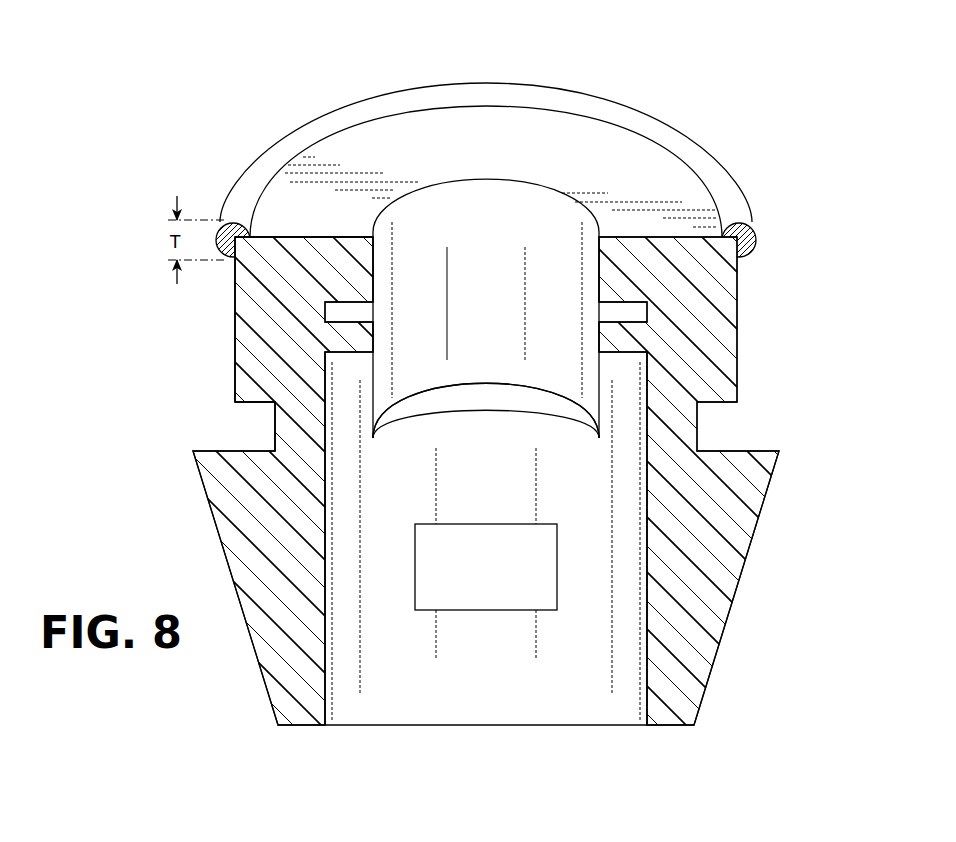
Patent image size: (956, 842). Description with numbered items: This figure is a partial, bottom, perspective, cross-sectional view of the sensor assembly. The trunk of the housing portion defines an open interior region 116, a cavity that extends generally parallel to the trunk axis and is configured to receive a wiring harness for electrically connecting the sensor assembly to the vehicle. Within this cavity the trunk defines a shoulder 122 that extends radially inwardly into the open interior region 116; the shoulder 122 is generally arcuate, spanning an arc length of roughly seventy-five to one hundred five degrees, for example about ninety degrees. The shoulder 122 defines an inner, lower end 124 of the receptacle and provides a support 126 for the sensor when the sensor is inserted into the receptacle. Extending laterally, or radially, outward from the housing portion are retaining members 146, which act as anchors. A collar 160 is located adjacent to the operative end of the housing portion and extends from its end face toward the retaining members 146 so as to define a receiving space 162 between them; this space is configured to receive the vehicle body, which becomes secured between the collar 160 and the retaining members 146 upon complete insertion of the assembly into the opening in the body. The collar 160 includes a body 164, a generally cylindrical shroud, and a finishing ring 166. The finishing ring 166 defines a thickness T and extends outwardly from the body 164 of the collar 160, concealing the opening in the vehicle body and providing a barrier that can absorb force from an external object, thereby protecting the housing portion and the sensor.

The open interior region 116 is at (383, 488).
The shoulder 122 is at (568, 441).
The inner end 124 is at (353, 405).
The support 126 is at (483, 392).
The retaining member 146 is at (215, 577).
The collar 160 is at (462, 448).
The receiving space 162 is at (238, 427).
The body 164 is at (235, 330).
The finishing ring 166 is at (328, 125).